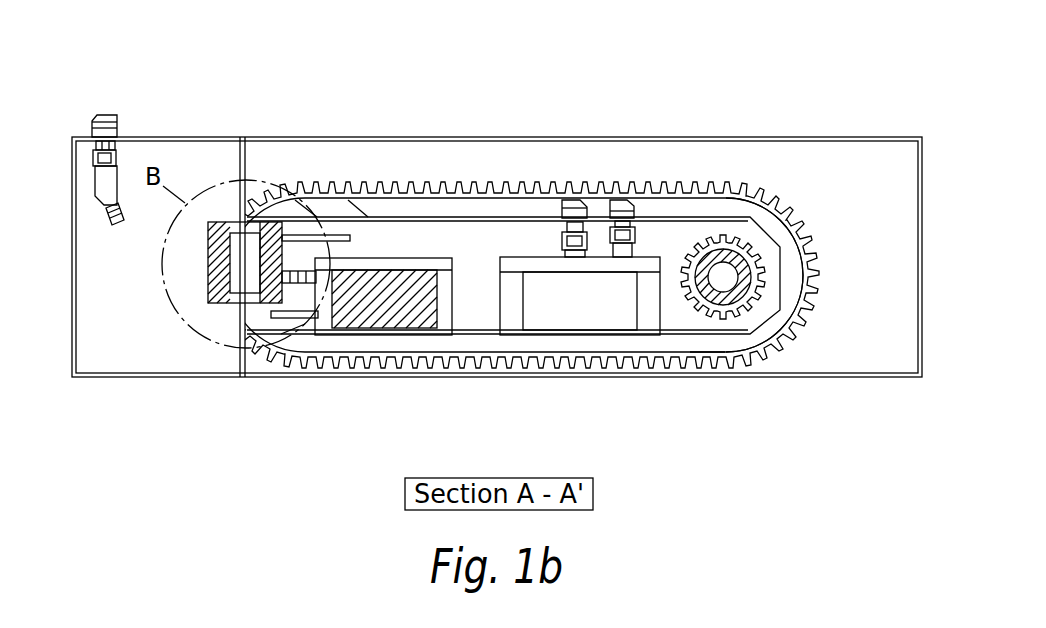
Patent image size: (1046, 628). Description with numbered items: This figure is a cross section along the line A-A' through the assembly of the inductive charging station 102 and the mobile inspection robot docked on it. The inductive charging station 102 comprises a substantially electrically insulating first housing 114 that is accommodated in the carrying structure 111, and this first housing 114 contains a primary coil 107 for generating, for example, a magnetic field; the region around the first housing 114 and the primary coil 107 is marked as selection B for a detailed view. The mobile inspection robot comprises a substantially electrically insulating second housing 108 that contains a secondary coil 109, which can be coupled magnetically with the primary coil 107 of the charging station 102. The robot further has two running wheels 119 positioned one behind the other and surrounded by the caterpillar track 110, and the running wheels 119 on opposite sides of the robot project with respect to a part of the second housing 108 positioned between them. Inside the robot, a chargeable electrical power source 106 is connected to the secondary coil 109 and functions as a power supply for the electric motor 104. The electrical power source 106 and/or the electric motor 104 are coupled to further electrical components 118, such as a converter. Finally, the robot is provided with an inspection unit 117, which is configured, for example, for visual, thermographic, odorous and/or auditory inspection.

The inductive charging station 102 is at (202, 137).
The electric motor 104 is at (732, 265).
The chargeable electrical power source 106 is at (397, 293).
The primary coil 107 is at (217, 270).
The second housing 108 is at (279, 303).
The secondary coil 109 is at (262, 205).
The caterpillar track 110 is at (808, 237).
The carrying structure 111 is at (509, 137).
The first housing 114 is at (222, 305).
The inspection unit 117 is at (620, 208).
The further electrical components 118 is at (572, 300).
The running wheels 119 is at (305, 328).